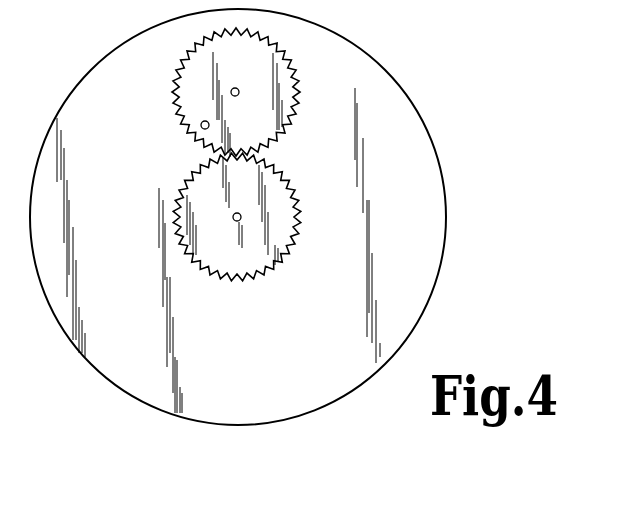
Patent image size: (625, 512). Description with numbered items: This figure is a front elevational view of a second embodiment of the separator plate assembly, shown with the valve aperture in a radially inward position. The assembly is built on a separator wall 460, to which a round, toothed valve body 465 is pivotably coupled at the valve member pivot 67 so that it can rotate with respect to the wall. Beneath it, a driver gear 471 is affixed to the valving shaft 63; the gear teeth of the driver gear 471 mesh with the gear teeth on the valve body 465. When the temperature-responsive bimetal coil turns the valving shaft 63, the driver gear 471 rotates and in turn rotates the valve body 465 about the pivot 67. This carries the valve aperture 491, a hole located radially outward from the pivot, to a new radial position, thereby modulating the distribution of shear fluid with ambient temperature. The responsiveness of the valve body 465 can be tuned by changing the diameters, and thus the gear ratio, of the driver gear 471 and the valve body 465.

The separator wall 460 is at (210, 351).
The valve body 465 is at (271, 82).
The driver gear 471 is at (261, 268).
The valve member pivot 67 is at (233, 96).
The valving shaft 63 is at (235, 221).
The valve aperture 491 is at (196, 124).